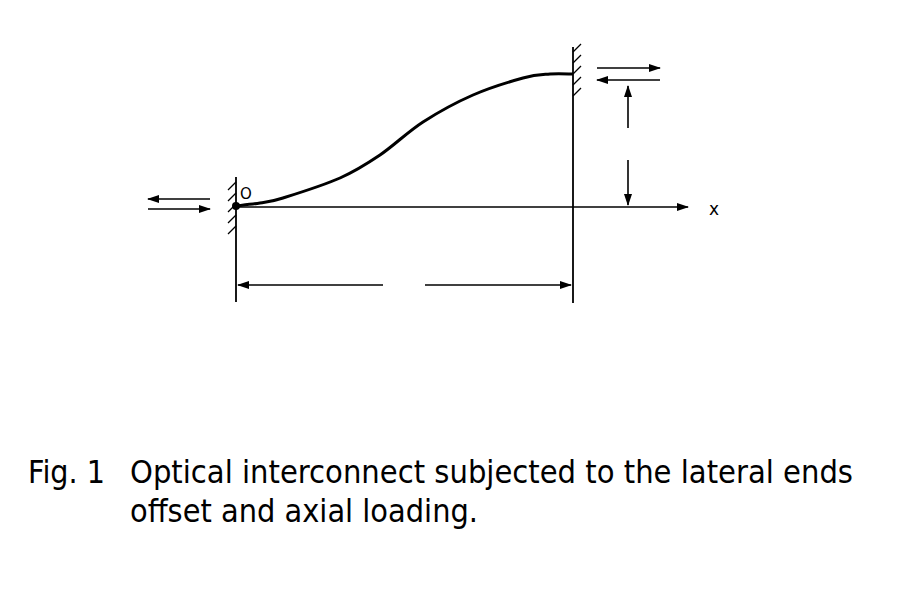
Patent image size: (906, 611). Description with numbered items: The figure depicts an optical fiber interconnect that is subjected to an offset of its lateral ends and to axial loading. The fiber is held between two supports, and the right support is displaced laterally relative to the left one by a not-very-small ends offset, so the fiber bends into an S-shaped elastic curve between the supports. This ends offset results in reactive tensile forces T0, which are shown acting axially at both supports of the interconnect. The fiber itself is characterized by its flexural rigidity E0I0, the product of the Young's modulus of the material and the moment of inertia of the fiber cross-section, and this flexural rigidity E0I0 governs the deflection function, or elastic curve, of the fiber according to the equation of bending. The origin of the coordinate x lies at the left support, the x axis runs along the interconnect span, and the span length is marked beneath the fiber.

The reactive tensile forces T0 is at (402, 144).
The flexural rigidity of the fiber E0I0 is at (424, 122).